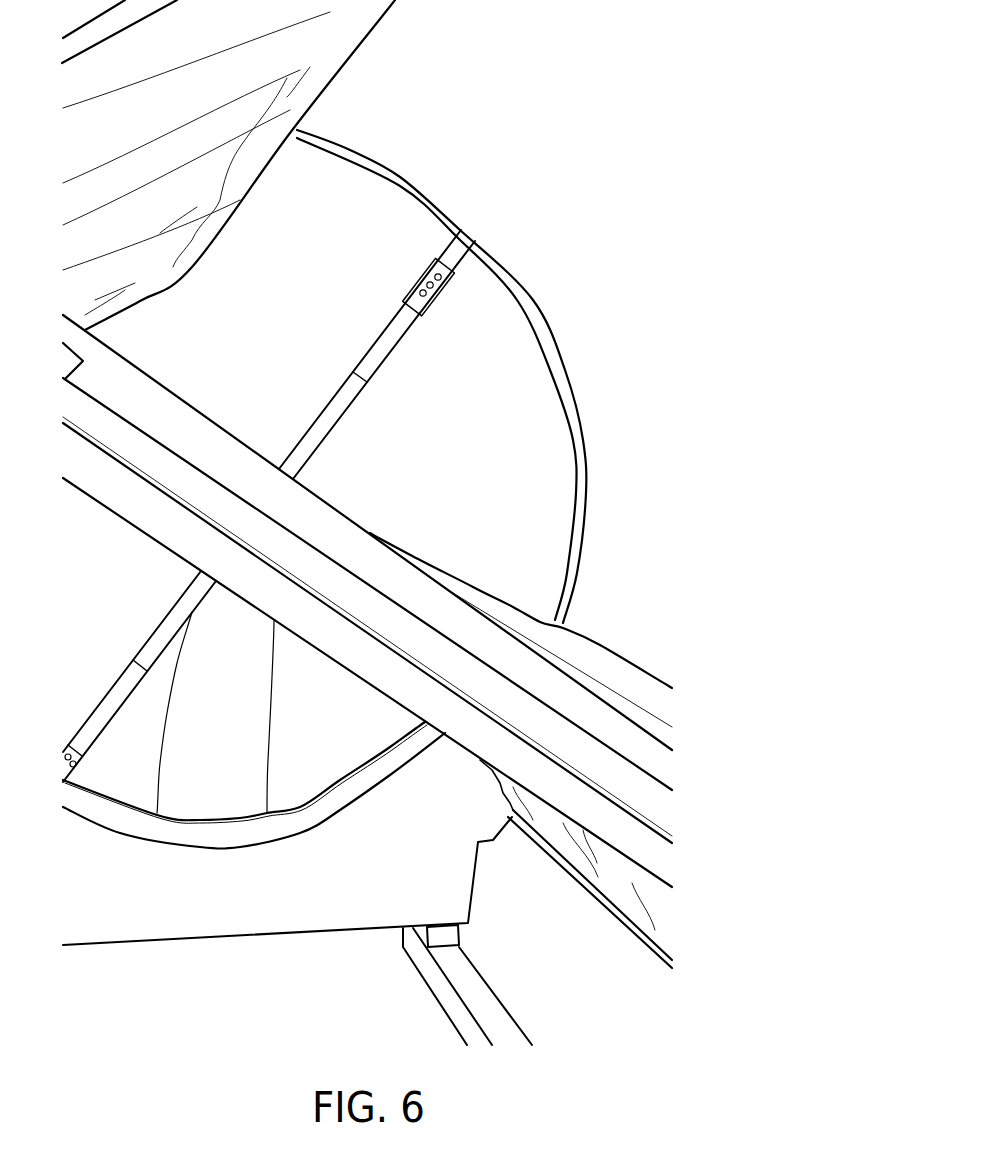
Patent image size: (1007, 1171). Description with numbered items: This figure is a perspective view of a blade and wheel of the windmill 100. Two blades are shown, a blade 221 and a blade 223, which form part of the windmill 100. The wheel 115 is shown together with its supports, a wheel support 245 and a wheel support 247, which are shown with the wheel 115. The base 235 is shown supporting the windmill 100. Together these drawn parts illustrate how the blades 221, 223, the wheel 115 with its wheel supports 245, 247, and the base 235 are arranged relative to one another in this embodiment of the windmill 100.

The windmill 100 is at (570, 86).
The wheel 115 is at (433, 200).
The blade 221 is at (312, 42).
The blade 223 is at (622, 668).
The base 235 is at (374, 826).
The wheel support 245 is at (396, 330).
The wheel support 247 is at (167, 623).